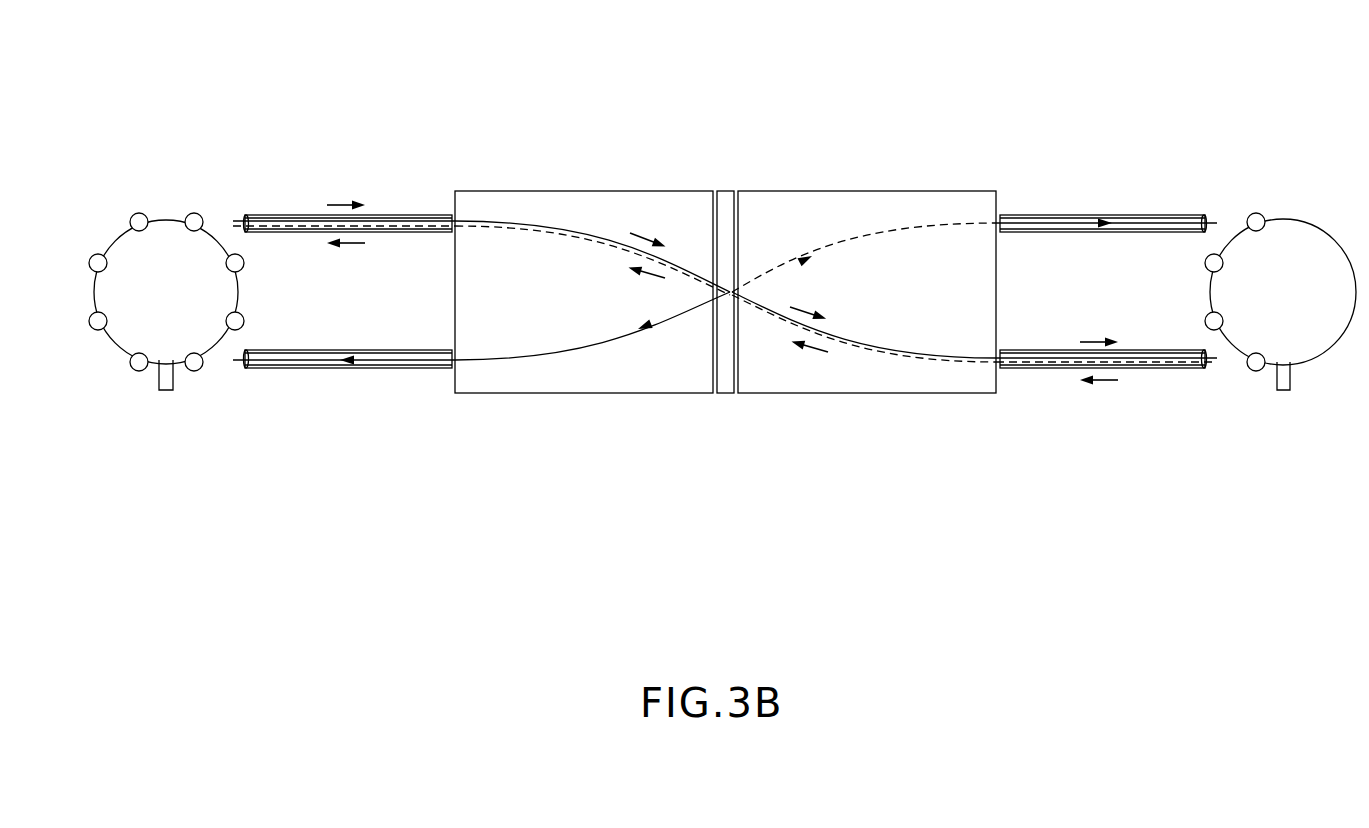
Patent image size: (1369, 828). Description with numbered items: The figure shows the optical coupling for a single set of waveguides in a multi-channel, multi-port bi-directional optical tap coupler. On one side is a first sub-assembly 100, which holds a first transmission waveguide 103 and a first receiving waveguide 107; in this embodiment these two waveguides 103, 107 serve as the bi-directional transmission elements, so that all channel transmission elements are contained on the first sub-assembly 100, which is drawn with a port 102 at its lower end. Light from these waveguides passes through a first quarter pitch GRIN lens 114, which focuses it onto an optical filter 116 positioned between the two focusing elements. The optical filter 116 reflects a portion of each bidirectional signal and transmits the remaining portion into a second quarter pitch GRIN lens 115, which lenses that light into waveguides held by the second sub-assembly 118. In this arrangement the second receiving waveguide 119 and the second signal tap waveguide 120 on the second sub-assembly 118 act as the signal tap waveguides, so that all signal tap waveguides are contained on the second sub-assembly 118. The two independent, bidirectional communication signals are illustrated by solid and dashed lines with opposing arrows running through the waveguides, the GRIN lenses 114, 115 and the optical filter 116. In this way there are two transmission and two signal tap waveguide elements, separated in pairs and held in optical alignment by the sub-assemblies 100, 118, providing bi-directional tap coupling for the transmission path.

The first sub-assembly 100 is at (95, 198).
The chamber stem port 102 is at (165, 385).
The first transmission waveguide 103 is at (143, 218).
The first receiving waveguide 107 is at (196, 364).
The first quarter pitch GRIN lens 114 is at (583, 190).
The second quarter pitch GRIN lens 115 is at (866, 190).
The optical filter 116 is at (724, 190).
The second sub-assembly 118 is at (1288, 185).
The second receiving waveguide 119 is at (1253, 368).
The second signal tap waveguide 120 is at (1253, 216).